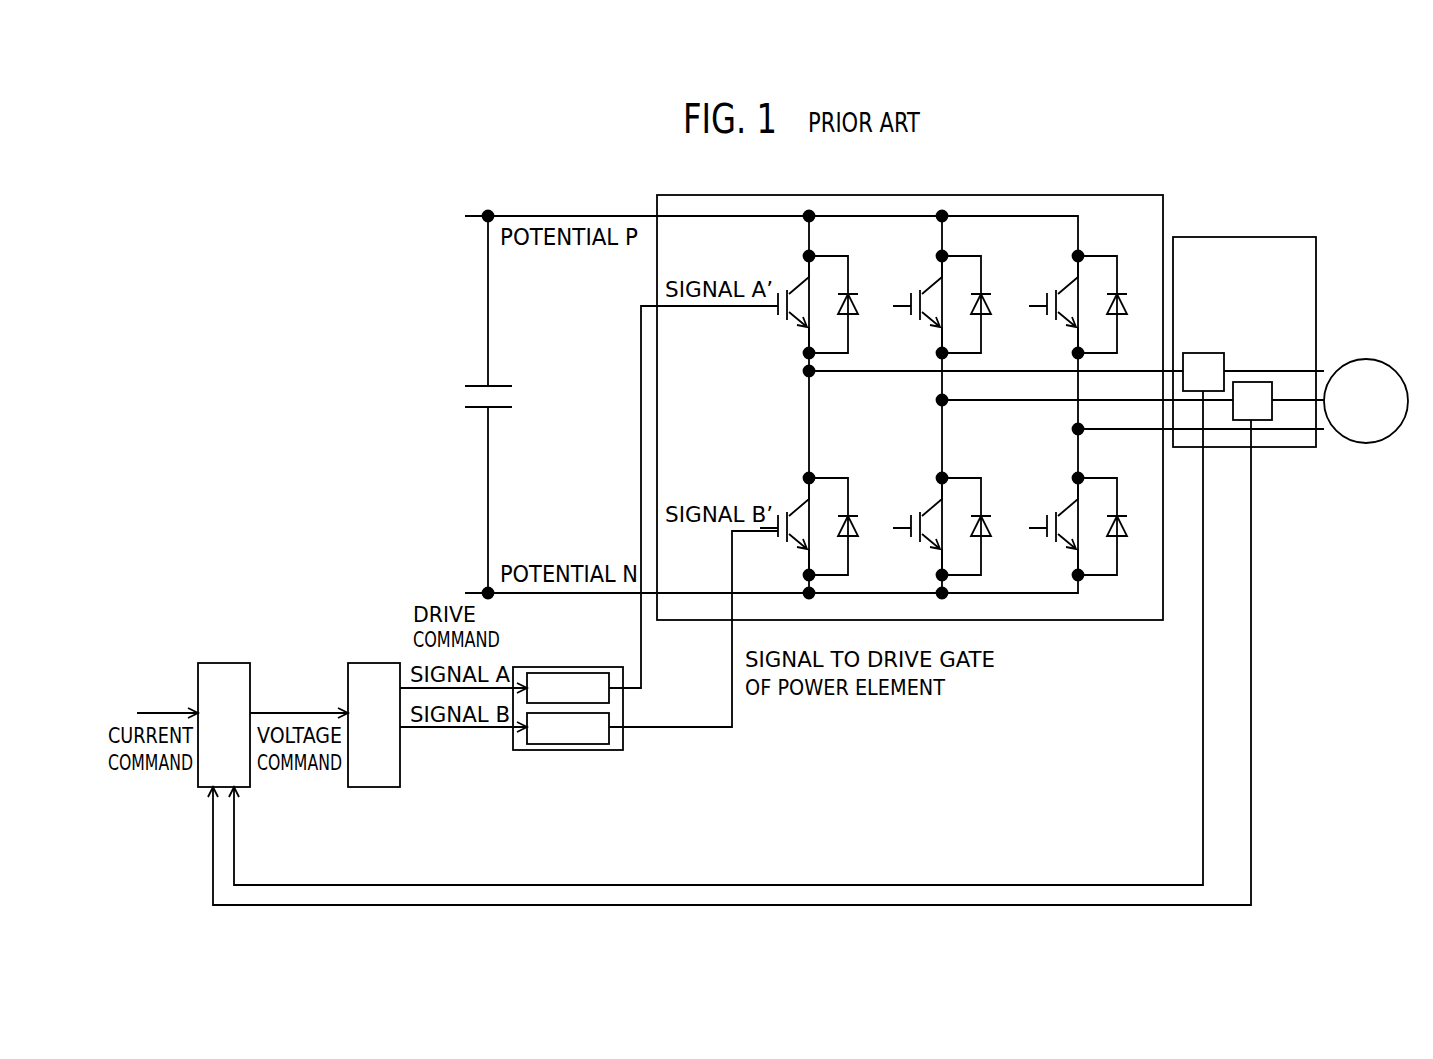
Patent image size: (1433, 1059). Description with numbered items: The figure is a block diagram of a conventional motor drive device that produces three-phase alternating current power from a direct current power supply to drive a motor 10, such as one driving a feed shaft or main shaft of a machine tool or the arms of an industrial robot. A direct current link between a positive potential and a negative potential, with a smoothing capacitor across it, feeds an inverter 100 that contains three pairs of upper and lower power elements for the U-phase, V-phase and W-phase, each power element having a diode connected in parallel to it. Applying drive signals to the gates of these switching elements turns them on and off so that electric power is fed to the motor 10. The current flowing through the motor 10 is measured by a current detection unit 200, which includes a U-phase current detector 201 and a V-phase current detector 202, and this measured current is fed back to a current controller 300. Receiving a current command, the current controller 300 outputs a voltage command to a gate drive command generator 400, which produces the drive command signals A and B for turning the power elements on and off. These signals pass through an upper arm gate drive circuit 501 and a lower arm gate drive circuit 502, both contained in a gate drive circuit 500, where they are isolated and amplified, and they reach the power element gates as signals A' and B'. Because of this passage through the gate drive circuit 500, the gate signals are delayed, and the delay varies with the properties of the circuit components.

The motor 10 is at (1360, 360).
The inverter 100 is at (1085, 195).
The current detection unit 200 is at (1249, 342).
The U-phase current detector 201 is at (1224, 362).
The V-phase current detector 202 is at (1258, 420).
The current controller 300 is at (198, 780).
The gate drive command generator 400 is at (367, 663).
The gate drive circuit 500 is at (600, 705).
The upper arm gate drive circuit 501 is at (573, 673).
The lower arm gate drive circuit 502 is at (623, 743).